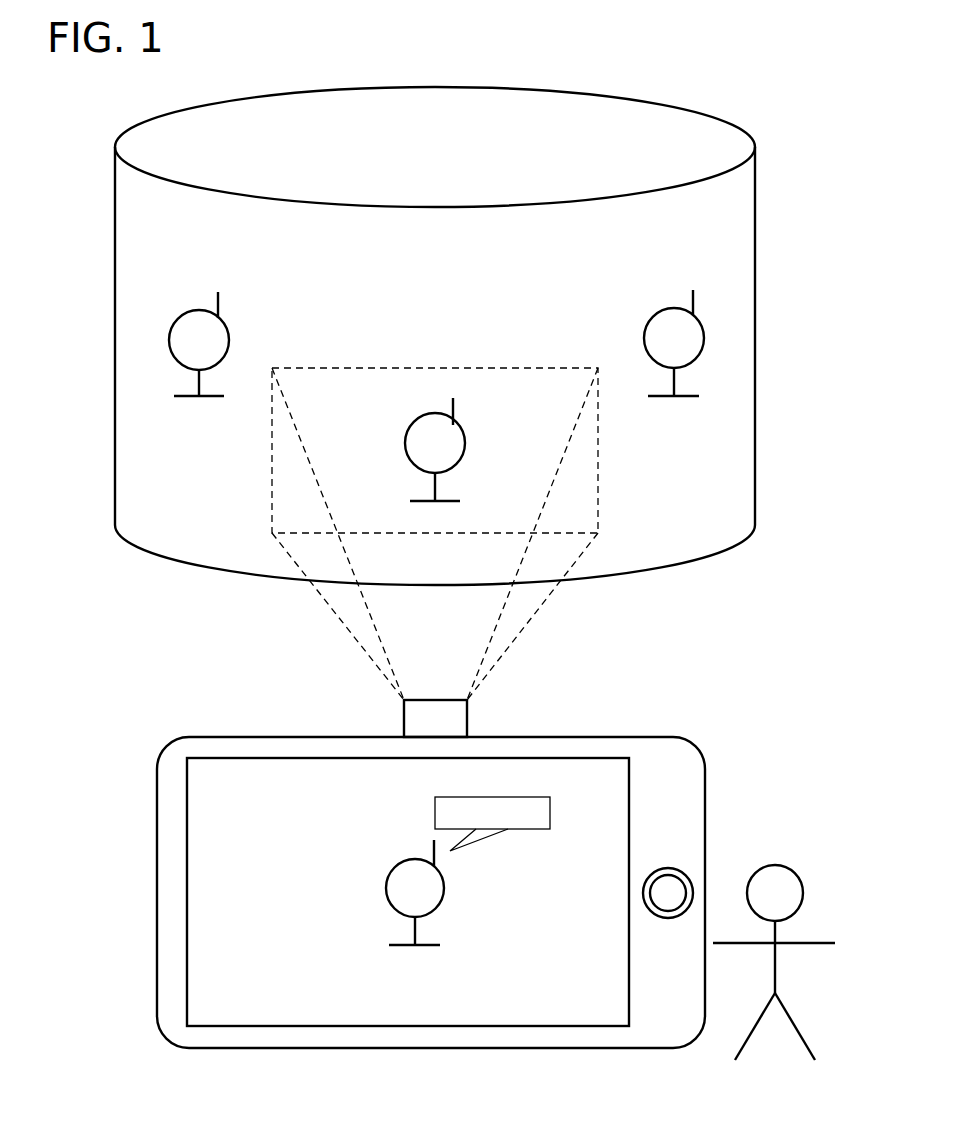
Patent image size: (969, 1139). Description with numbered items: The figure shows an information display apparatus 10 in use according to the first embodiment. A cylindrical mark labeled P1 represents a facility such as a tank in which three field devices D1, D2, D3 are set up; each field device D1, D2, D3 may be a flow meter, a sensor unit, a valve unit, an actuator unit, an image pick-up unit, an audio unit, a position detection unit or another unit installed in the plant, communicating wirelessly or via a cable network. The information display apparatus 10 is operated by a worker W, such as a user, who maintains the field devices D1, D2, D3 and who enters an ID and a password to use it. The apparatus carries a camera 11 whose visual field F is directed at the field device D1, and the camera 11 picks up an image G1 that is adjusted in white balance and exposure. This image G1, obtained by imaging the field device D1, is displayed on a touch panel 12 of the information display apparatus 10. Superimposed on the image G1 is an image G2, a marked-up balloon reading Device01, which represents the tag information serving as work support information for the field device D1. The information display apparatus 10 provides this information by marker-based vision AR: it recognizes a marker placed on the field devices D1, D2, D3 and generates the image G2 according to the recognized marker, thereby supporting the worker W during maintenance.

The facility P1 is at (652, 103).
The field device D1 is at (435, 413).
The field device D2 is at (200, 310).
The field device D3 is at (675, 308).
The visual field F is at (598, 448).
The camera 11 is at (432, 700).
The information display apparatus 10 is at (617, 737).
The touch panel 12 is at (273, 1003).
The image G1 is at (414, 962).
The image G2 is at (521, 783).
The worker W is at (796, 858).